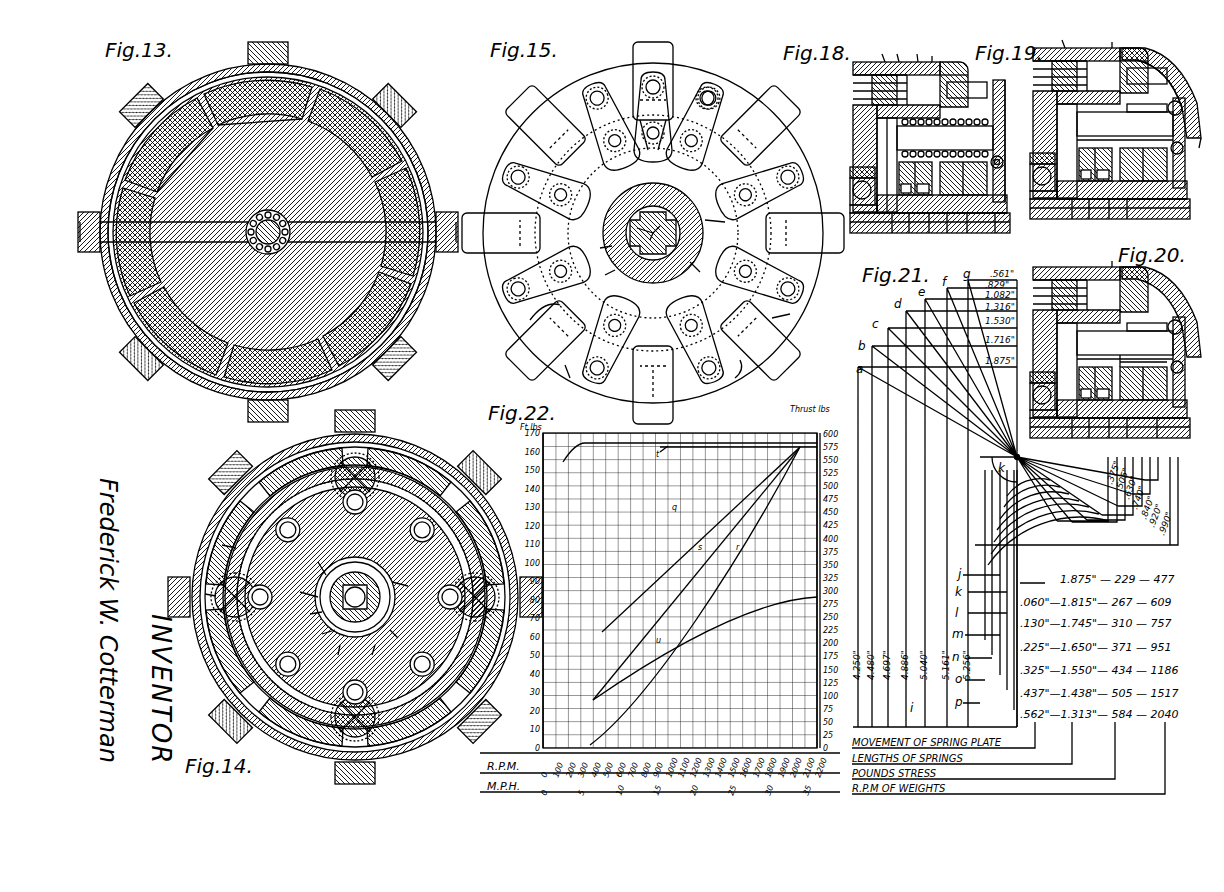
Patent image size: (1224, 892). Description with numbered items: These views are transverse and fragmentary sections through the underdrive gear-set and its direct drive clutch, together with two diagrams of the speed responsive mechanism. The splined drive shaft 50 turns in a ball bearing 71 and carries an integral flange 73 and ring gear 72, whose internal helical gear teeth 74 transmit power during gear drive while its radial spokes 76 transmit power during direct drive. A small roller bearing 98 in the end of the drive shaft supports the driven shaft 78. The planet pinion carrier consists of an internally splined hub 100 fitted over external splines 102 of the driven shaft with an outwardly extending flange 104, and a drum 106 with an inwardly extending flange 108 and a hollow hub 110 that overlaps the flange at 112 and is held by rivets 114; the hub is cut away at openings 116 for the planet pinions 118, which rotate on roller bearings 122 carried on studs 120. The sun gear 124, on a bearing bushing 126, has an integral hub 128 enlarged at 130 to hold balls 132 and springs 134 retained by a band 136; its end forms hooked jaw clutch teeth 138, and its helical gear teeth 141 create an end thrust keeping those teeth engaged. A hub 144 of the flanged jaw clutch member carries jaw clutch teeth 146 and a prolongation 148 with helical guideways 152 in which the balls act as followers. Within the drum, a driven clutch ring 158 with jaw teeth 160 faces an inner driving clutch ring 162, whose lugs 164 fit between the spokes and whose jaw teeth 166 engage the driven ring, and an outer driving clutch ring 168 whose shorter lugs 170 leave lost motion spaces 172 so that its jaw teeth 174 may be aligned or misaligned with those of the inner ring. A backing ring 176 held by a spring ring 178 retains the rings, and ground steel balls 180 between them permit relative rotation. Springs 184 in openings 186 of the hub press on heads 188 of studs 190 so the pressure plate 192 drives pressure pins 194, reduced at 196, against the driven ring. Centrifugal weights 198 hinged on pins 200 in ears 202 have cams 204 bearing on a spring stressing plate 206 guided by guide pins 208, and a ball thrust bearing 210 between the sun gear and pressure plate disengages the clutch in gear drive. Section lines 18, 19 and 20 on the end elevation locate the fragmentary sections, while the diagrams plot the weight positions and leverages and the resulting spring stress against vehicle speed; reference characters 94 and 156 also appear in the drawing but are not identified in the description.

In FIG. 15, the section line 18 is at (484, 158).
In FIG. 15, the section line 19 is at (790, 98).
In FIG. 15, the section line 20 is at (803, 112).
In FIG. 18, the splined drive shaft 50 is at (854, 208).
In FIG. 19, the splined drive shaft 50 is at (1034, 194).
In FIG. 20, the splined drive shaft 50 is at (1034, 413).
In FIG. 18, the ball bearing 71 is at (862, 186).
In FIG. 19, the ball bearing 71 is at (1042, 172).
In FIG. 20, the ball bearing 71 is at (1042, 391).
In FIG. 14, the ring gear 72 is at (221, 544).
In FIG. 18, the ring gear 72 is at (886, 114).
In FIG. 19, the ring gear 72 is at (1066, 100).
In FIG. 20, the ring gear 72 is at (1066, 319).
In FIG. 13, the flange 73 is at (250, 310).
In FIG. 18, the flange 73 is at (855, 158).
In FIG. 19, the flange 73 is at (1035, 144).
In FIG. 20, the flange 73 is at (1035, 363).
In FIG. 14, the internal helical gear teeth 74 is at (206, 592).
In FIG. 18, the internal helical gear teeth 74 is at (945, 138).
In FIG. 19, the internal helical gear teeth 74 is at (1125, 124).
In FIG. 20, the internal helical gear teeth 74 is at (1125, 343).
In FIG. 13, the spokes 76 is at (376, 125).
In FIG. 18, the spokes 76 is at (881, 52).
In FIG. 19, the spokes 76 is at (1061, 38).
In FIG. 13, the driven shaft 78 is at (286, 230).
In FIG. 15, the driven shaft 78 is at (686, 240).
In FIG. 14, the driven shaft 78 is at (355, 597).
In FIG. 18, the driven shaft 78 is at (930, 234).
In FIG. 19, the driven shaft 78 is at (1107, 221).
In FIG. 20, the driven shaft 78 is at (1106, 441).
In FIG. 14, the pin 94 is at (311, 612).
In FIG. 13, the small roller bearing 98 is at (250, 226).
In FIG. 18, the small roller bearing 98 is at (929, 229).
In FIG. 19, the small roller bearing 98 is at (1099, 209).
In FIG. 20, the small roller bearing 98 is at (1099, 428).
In FIG. 14, the internally splined hub 100 is at (352, 622).
In FIG. 18, the internally splined hub 100 is at (912, 229).
In FIG. 19, the internally splined hub 100 is at (1092, 215).
In FIG. 20, the internally splined hub 100 is at (1094, 436).
In FIG. 15, the external splines 102 is at (655, 190).
In FIG. 14, the external splines 102 is at (357, 598).
In FIG. 18, the external splines 102 is at (946, 229).
In FIG. 19, the external splines 102 is at (1108, 220).
In FIG. 20, the external splines 102 is at (1118, 436).
In FIG. 18, the outwardly extending flange 104 is at (892, 234).
In FIG. 19, the outwardly extending flange 104 is at (1072, 220).
In FIG. 20, the outwardly extending flange 104 is at (1066, 436).
In FIG. 13, the drum 106 is at (348, 75).
In FIG. 15, the drum 106 is at (722, 400).
In FIG. 14, the drum 106 is at (404, 436).
In FIG. 18, the drum 106 is at (954, 73).
In FIG. 19, the drum 106 is at (1134, 60).
In FIG. 20, the drum 106 is at (1122, 282).
In FIG. 15, the inwardly extending flange 108 is at (686, 398).
In FIG. 18, the inwardly extending flange 108 is at (959, 63).
In FIG. 19, the inwardly extending flange 108 is at (1150, 49).
In FIG. 20, the inwardly extending flange 108 is at (1147, 329).
In FIG. 18, the large hollow hub 110 is at (863, 165).
In FIG. 19, the large hollow hub 110 is at (1070, 151).
In FIG. 20, the large hollow hub 110 is at (1125, 347).
In FIG. 20, the hub overlap portion 112 is at (1043, 370).
In FIG. 15, the rivets 114 is at (702, 266).
In FIG. 14, the rivets 114 is at (408, 552).
In FIG. 20, the rivets 114 is at (1142, 357).
In FIG. 14, the openings 116 is at (339, 651).
In FIG. 14, the planet pinions 118 is at (425, 614).
In FIG. 14, the studs 120 is at (350, 520).
In FIG. 14, the roller bearings 122 is at (407, 584).
In FIG. 14, the sun gear 124 is at (316, 566).
In FIG. 18, the sun gear 124 is at (915, 178).
In FIG. 19, the sun gear 124 is at (1095, 164).
In FIG. 20, the sun gear 124 is at (1095, 383).
In FIG. 14, the bearing bushing 126 is at (305, 591).
In FIG. 18, the bearing bushing 126 is at (924, 234).
In FIG. 19, the bearing bushing 126 is at (1126, 215).
In FIG. 20, the bearing bushing 126 is at (1138, 436).
In FIG. 18, the integral hub 128 is at (924, 189).
In FIG. 19, the integral hub 128 is at (1104, 175).
In FIG. 20, the integral hub 128 is at (1104, 394).
In FIG. 18, the enlarged portion 130 is at (1013, 168).
In FIG. 19, the enlarged portion 130 is at (1144, 164).
In FIG. 20, the enlarged portion 130 is at (1144, 383).
In FIG. 15, the balls 132 is at (609, 275).
In FIG. 15, the springs 134 is at (600, 251).
In FIG. 15, the band 136 is at (658, 303).
In FIG. 18, the band 136 is at (963, 178).
In FIG. 19, the band 136 is at (1143, 164).
In FIG. 20, the band 136 is at (1143, 383).
In FIG. 18, the jaw clutch teeth 138 is at (964, 178).
In FIG. 18, the gear teeth 141 is at (922, 178).
In FIG. 19, the gear teeth 141 is at (1102, 164).
In FIG. 20, the gear teeth 141 is at (1102, 383).
In FIG. 15, the hub 144 is at (620, 204).
In FIG. 18, the hub 144 is at (953, 201).
In FIG. 19, the hub 144 is at (1122, 194).
In FIG. 20, the hub 144 is at (1129, 436).
In FIG. 18, the jaw clutch teeth 146 is at (953, 195).
In FIG. 19, the jaw clutch teeth 146 is at (1098, 183).
In FIG. 20, the jaw clutch teeth 146 is at (1122, 409).
In FIG. 18, the prolongation 148 is at (998, 229).
In FIG. 20, the prolongation 148 is at (1164, 436).
In FIG. 15, the guideways 152 is at (715, 215).
In FIG. 18, the guideways 152 is at (960, 234).
In FIG. 18, the block 156 is at (906, 189).
In FIG. 19, the block 156 is at (1086, 175).
In FIG. 20, the block 156 is at (1086, 394).
In FIG. 18, the driven clutch ring 158 is at (923, 77).
In FIG. 19, the driven clutch ring 158 is at (1106, 59).
In FIG. 20, the driven clutch ring 158 is at (1134, 291).
In FIG. 18, the jaw teeth 160 is at (934, 51).
In FIG. 19, the jaw teeth 160 is at (1100, 38).
In FIG. 20, the jaw teeth 160 is at (1154, 270).
In FIG. 18, the inner driving clutch ring 162 is at (868, 104).
In FIG. 19, the inner driving clutch ring 162 is at (1048, 90).
In FIG. 20, the inner driving clutch ring 162 is at (1048, 309).
In FIG. 13, the lugs 164 is at (396, 150).
In FIG. 18, the lugs 164 is at (868, 94).
In FIG. 19, the lugs 164 is at (1048, 80).
In FIG. 20, the lugs 164 is at (1048, 299).
In FIG. 14, the jaw teeth 166 is at (290, 460).
In FIG. 19, the jaw teeth 166 is at (1167, 84).
In FIG. 18, the outer driving clutch ring 168 is at (886, 77).
In FIG. 19, the outer driving clutch ring 168 is at (1067, 59).
In FIG. 20, the outer driving clutch ring 168 is at (1067, 281).
In FIG. 13, the lugs 170 is at (422, 192).
In FIG. 18, the lugs 170 is at (868, 85).
In FIG. 19, the lugs 170 is at (1048, 71).
In FIG. 20, the lugs 170 is at (1048, 290).
In FIG. 13, the lost motion spaces 172 is at (420, 266).
In FIG. 14, the jaw teeth 174 is at (350, 444).
In FIG. 18, the jaw teeth 174 is at (918, 52).
In FIG. 18, the backing ring 176 is at (892, 58).
In FIG. 19, the backing ring 176 is at (1072, 44).
In FIG. 20, the backing ring 176 is at (1072, 263).
In FIG. 18, the spring ring 178 is at (868, 75).
In FIG. 19, the spring ring 178 is at (1048, 61).
In FIG. 20, the spring ring 178 is at (1048, 280).
In FIG. 18, the ground steel balls 180 is at (899, 52).
In FIG. 15, the springs 184 is at (650, 134).
In FIG. 18, the springs 184 is at (945, 116).
In FIG. 15, the openings 186 is at (654, 135).
In FIG. 14, the openings 186 is at (321, 632).
In FIG. 18, the openings 186 is at (858, 165).
In FIG. 18, the heads 188 is at (945, 145).
In FIG. 15, the studs 190 is at (762, 282).
In FIG. 14, the studs 190 is at (371, 651).
In FIG. 18, the studs 190 is at (1017, 141).
In FIG. 15, the pressure plate 192 is at (716, 96).
In FIG. 18, the pressure plate 192 is at (1011, 141).
In FIG. 19, the pressure plate 192 is at (1198, 143).
In FIG. 20, the pressure plate 192 is at (1198, 362).
In FIG. 15, the pressure pins 194 is at (708, 92).
In FIG. 18, the reduced portion 196 is at (967, 90).
In FIG. 13, the weights 198 is at (404, 106).
In FIG. 15, the weights 198 is at (790, 344).
In FIG. 14, the weights 198 is at (236, 468).
In FIG. 19, the weights 198 is at (1161, 93).
In FIG. 20, the weights 198 is at (1161, 312).
In FIG. 15, the pins 200 is at (792, 314).
In FIG. 19, the pins 200 is at (1147, 102).
In FIG. 15, the ears 202 is at (738, 380).
In FIG. 19, the ears 202 is at (1191, 98).
In FIG. 20, the ears 202 is at (1158, 317).
In FIG. 15, the cam 204 is at (649, 385).
In FIG. 19, the cam 204 is at (1211, 148).
In FIG. 15, the spring stressing plate 206 is at (610, 375).
In FIG. 19, the spring stressing plate 206 is at (1147, 76).
In FIG. 20, the spring stressing plate 206 is at (1143, 367).
In FIG. 15, the guide pins 208 is at (556, 330).
In FIG. 14, the guide pins 208 is at (397, 636).
In FIG. 19, the guide pins 208 is at (1125, 144).
In FIG. 18, the ball thrust bearing 210 is at (1010, 160).
In FIG. 19, the ball thrust bearing 210 is at (1196, 149).
In FIG. 20, the ball thrust bearing 210 is at (1196, 368).